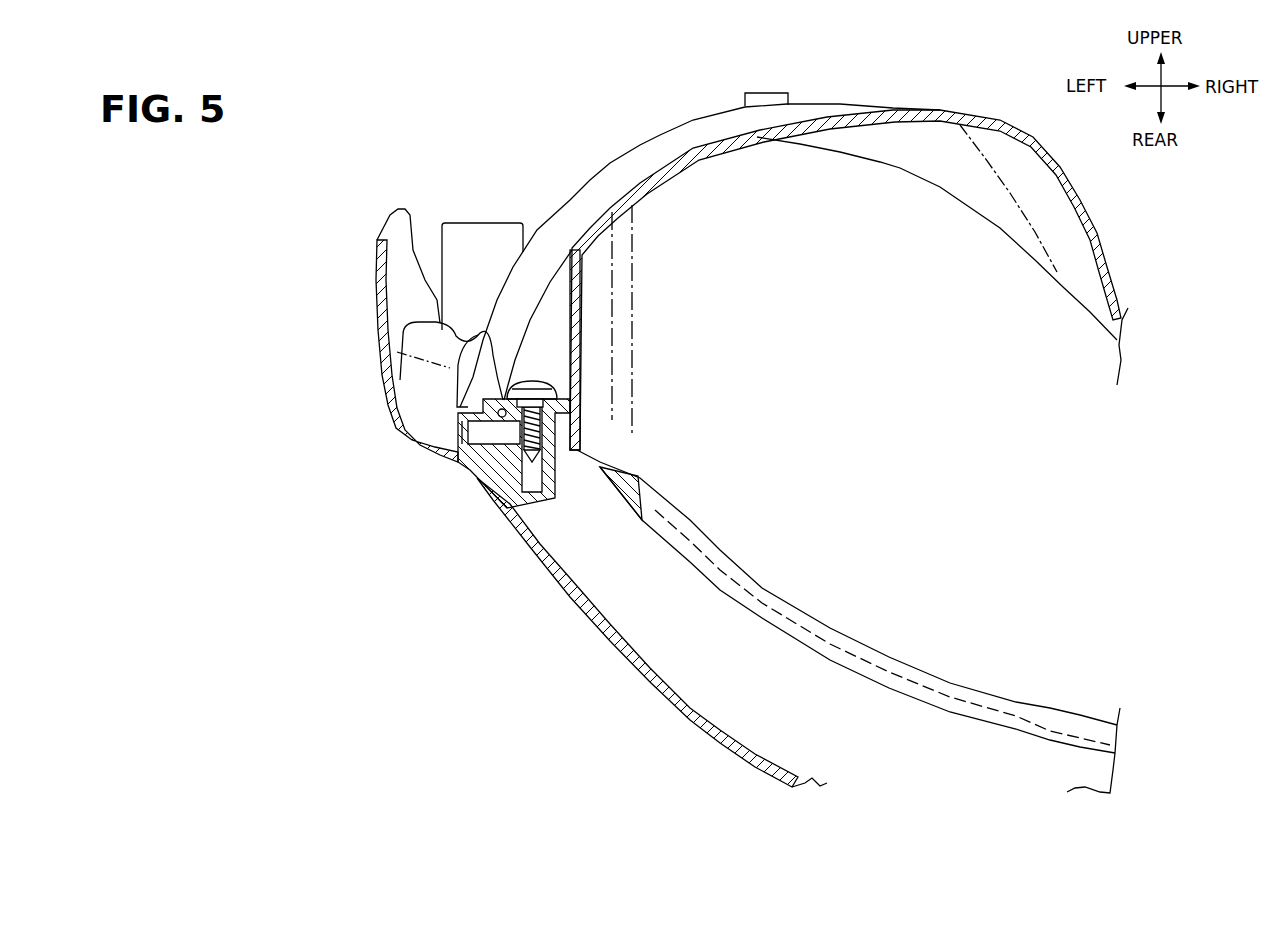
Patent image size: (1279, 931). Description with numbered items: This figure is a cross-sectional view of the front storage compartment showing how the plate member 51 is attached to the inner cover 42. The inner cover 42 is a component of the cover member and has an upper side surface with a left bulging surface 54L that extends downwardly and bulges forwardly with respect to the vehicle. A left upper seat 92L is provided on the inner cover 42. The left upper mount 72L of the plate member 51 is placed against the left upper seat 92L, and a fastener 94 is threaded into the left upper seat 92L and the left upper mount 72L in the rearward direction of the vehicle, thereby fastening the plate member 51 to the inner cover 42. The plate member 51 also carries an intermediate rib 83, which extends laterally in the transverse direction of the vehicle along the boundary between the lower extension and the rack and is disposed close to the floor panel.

The inner cover 42 is at (710, 102).
The left bulging surface 54L is at (876, 125).
The left upper seat 92L is at (503, 405).
The fastener 94 is at (533, 380).
The intermediate rib 83 is at (580, 453).
The left upper mount 72L is at (472, 475).
The plate member 51 is at (659, 731).